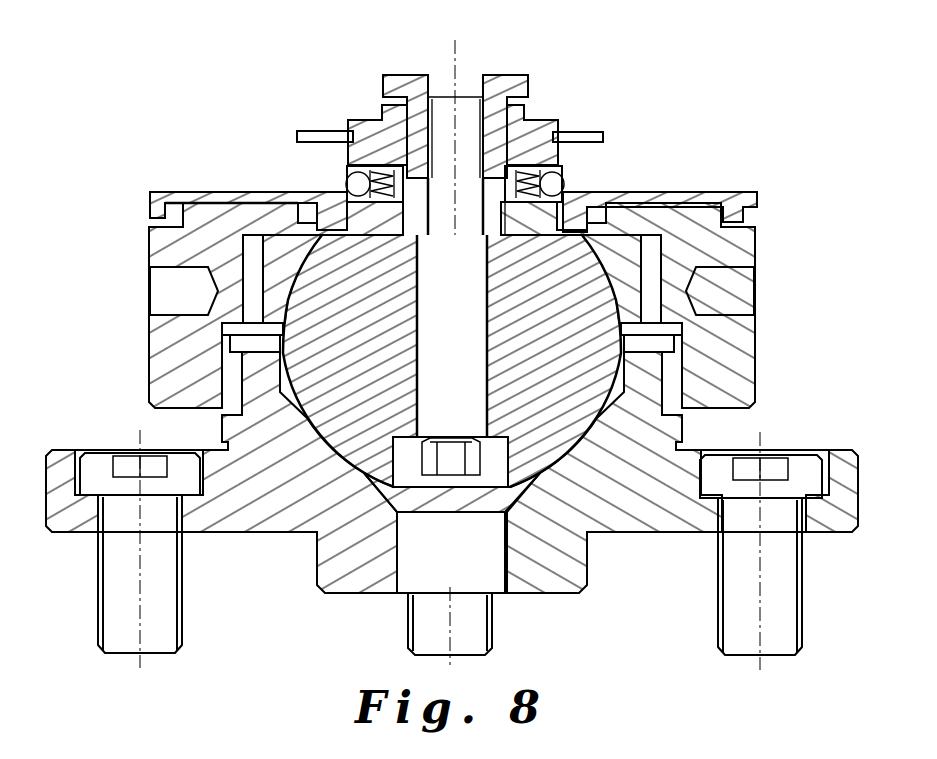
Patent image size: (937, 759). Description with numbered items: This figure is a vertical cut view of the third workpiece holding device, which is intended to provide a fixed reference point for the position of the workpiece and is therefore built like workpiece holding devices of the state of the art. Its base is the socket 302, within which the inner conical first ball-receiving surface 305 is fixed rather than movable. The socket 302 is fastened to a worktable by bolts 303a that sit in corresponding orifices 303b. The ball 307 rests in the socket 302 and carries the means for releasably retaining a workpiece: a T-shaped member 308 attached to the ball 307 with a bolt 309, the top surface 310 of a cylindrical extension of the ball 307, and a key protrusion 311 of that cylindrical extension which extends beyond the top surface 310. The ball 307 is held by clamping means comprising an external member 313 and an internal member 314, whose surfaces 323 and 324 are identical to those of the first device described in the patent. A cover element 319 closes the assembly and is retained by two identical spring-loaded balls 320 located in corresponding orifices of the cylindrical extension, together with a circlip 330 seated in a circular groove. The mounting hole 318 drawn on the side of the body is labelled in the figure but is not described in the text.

The socket 302 is at (767, 387).
The bolts 303a is at (795, 630).
The orifices 303b is at (803, 540).
The inner conical first ball-receiving surface 305 is at (337, 452).
The ball 307 is at (543, 405).
The T-shaped member 308 is at (530, 76).
The bolt 309 is at (410, 478).
The top surface 310 is at (556, 133).
The key protrusion 311 is at (542, 118).
The external member 313 is at (147, 352).
The internal member 314 is at (245, 288).
The mounting hole 318 is at (735, 290).
The cover element 319 is at (758, 207).
The spring-loaded balls 320 is at (565, 178).
The surface 323 is at (262, 228).
The surface 324 is at (293, 203).
The circlip 330 is at (335, 129).